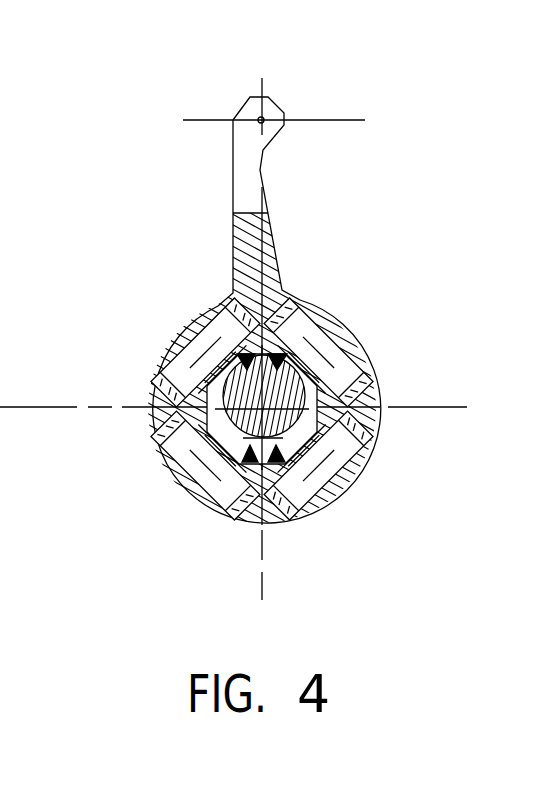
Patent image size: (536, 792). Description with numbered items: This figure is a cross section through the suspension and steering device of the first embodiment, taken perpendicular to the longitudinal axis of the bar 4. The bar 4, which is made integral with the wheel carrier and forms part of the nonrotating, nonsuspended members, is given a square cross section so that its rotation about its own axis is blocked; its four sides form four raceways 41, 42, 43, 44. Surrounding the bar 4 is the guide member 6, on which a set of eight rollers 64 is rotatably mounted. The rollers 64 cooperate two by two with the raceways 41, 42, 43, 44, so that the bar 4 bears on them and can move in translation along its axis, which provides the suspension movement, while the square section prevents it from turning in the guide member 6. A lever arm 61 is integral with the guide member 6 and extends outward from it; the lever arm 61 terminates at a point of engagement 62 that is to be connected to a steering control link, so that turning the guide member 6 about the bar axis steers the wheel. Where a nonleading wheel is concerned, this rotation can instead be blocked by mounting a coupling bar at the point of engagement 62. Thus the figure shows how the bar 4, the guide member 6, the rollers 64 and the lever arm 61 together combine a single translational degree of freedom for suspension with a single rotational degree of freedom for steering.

The bar 4 is at (340, 383).
The guide member 6 is at (210, 285).
The raceway 41 is at (290, 305).
The raceway 42 is at (312, 500).
The raceway 43 is at (213, 500).
The raceway 44 is at (207, 328).
The lever arm 61 is at (237, 240).
The point of engagement 62 is at (258, 119).
The rollers 64 is at (342, 341).